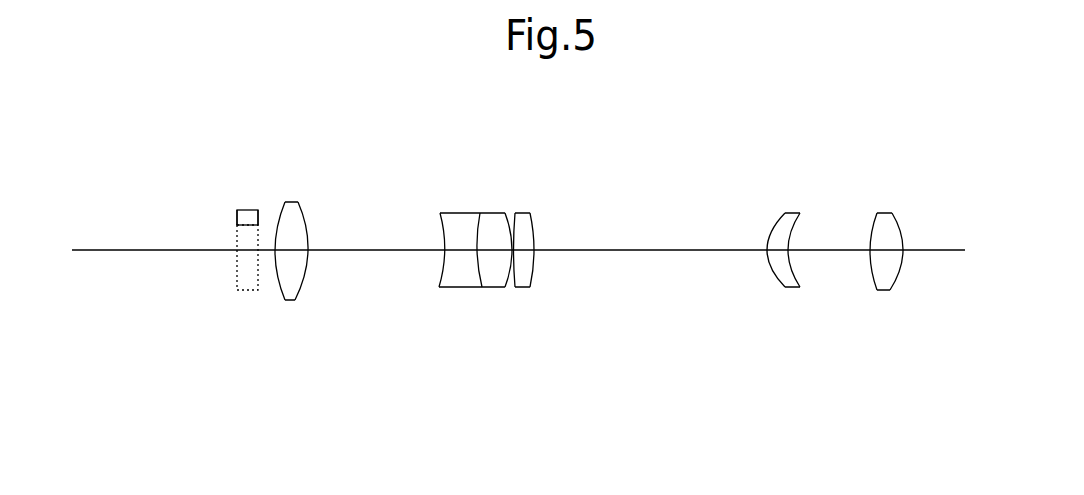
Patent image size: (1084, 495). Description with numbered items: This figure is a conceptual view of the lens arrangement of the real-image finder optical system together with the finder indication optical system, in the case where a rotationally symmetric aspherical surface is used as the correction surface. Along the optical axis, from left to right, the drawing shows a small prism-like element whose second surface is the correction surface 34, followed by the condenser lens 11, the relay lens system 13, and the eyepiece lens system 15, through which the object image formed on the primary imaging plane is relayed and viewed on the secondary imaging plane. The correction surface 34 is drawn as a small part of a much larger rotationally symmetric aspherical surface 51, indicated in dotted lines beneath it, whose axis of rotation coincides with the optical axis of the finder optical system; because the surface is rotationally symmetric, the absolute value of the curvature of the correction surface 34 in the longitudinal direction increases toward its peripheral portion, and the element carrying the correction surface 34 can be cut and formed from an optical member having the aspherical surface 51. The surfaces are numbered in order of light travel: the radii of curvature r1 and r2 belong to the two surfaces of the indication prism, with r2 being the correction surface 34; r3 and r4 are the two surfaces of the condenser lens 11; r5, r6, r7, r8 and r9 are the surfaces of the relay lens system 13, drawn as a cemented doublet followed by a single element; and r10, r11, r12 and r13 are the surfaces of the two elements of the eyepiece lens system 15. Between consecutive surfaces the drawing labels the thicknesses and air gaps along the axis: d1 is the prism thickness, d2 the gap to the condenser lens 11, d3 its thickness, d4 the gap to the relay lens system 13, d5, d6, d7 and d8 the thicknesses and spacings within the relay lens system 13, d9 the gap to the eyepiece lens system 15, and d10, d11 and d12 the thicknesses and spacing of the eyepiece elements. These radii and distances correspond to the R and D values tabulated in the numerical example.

The condenser lens 11 is at (326, 277).
The relay lens system 13 is at (496, 282).
The eyepiece lens system 15 is at (841, 282).
The correction surface 34 is at (264, 216).
The rotationally symmetric aspherical surface 51 is at (258, 232).
The radius of curvature of surface No. 1 r1 is at (236, 218).
The radius of curvature of surface No. 2 r2 is at (259, 220).
The radius of curvature of surface No. 3 r3 is at (277, 218).
The radius of curvature of surface No. 4 r4 is at (307, 218).
The radius of curvature of surface No. 5 r5 is at (443, 240).
The radius of curvature of surface No. 6 r6 is at (478, 233).
The radius of curvature of surface No. 7 r7 is at (510, 227).
The radius of curvature of surface No. 8 r8 is at (513, 230).
The radius of curvature of surface No. 9 r9 is at (533, 225).
The radius of curvature of surface No. 10 r10 is at (773, 232).
The radius of curvature of surface No. 11 r11 is at (795, 237).
The radius of curvature of surface No. 12 r12 is at (873, 228).
The radius of curvature of surface No. 13 r13 is at (898, 230).
The thickness between surfaces Nos. 1 and 2 d1 is at (252, 253).
The distance between surfaces Nos. 2 and 3 d2 is at (272, 253).
The thickness between surfaces Nos. 3 and 4 d3 is at (293, 253).
The distance between surfaces Nos. 4 and 5 d4 is at (370, 253).
The thickness between surfaces Nos. 5 and 6 d5 is at (462, 253).
The thickness between surfaces Nos. 6 and 7 d6 is at (495, 253).
The distance between surfaces Nos. 7 and 8 d7 is at (512, 253).
The thickness between surfaces Nos. 8 and 9 d8 is at (528, 253).
The distance between surfaces Nos. 9 and 10 d9 is at (627, 253).
The thickness between surfaces Nos. 10 and 11 d10 is at (780, 253).
The distance between surfaces Nos. 11 and 12 d11 is at (838, 253).
The thickness between surfaces Nos. 12 and 13 d12 is at (887, 253).